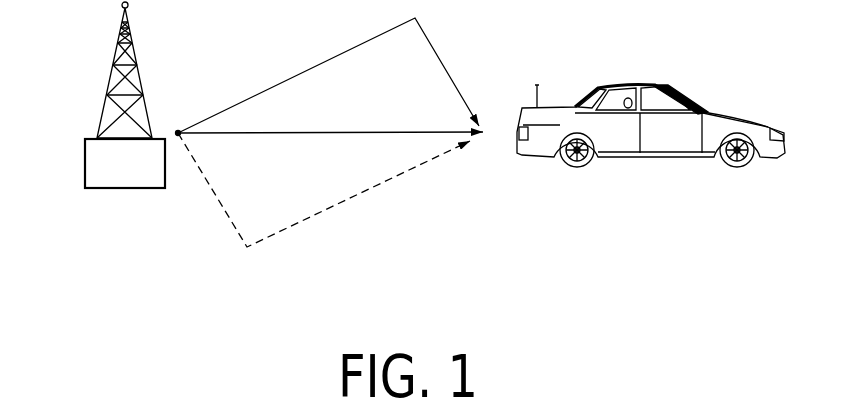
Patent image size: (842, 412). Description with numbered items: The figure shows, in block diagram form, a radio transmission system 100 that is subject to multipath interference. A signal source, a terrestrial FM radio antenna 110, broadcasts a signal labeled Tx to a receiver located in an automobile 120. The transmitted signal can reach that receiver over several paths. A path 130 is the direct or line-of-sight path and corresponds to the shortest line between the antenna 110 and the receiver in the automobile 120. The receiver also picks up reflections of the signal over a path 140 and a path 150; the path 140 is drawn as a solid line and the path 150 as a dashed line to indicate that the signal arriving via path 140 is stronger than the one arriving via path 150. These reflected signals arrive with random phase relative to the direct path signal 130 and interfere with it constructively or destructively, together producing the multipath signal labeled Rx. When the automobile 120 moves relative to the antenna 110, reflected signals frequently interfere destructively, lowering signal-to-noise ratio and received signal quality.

The radio transmission system 100 is at (411, 166).
The terrestrial FM radio antenna 110 is at (85, 163).
The automobile 120 is at (724, 113).
The direct path 130 is at (323, 132).
The reflected path 140 is at (360, 44).
The reflected path 150 is at (216, 195).